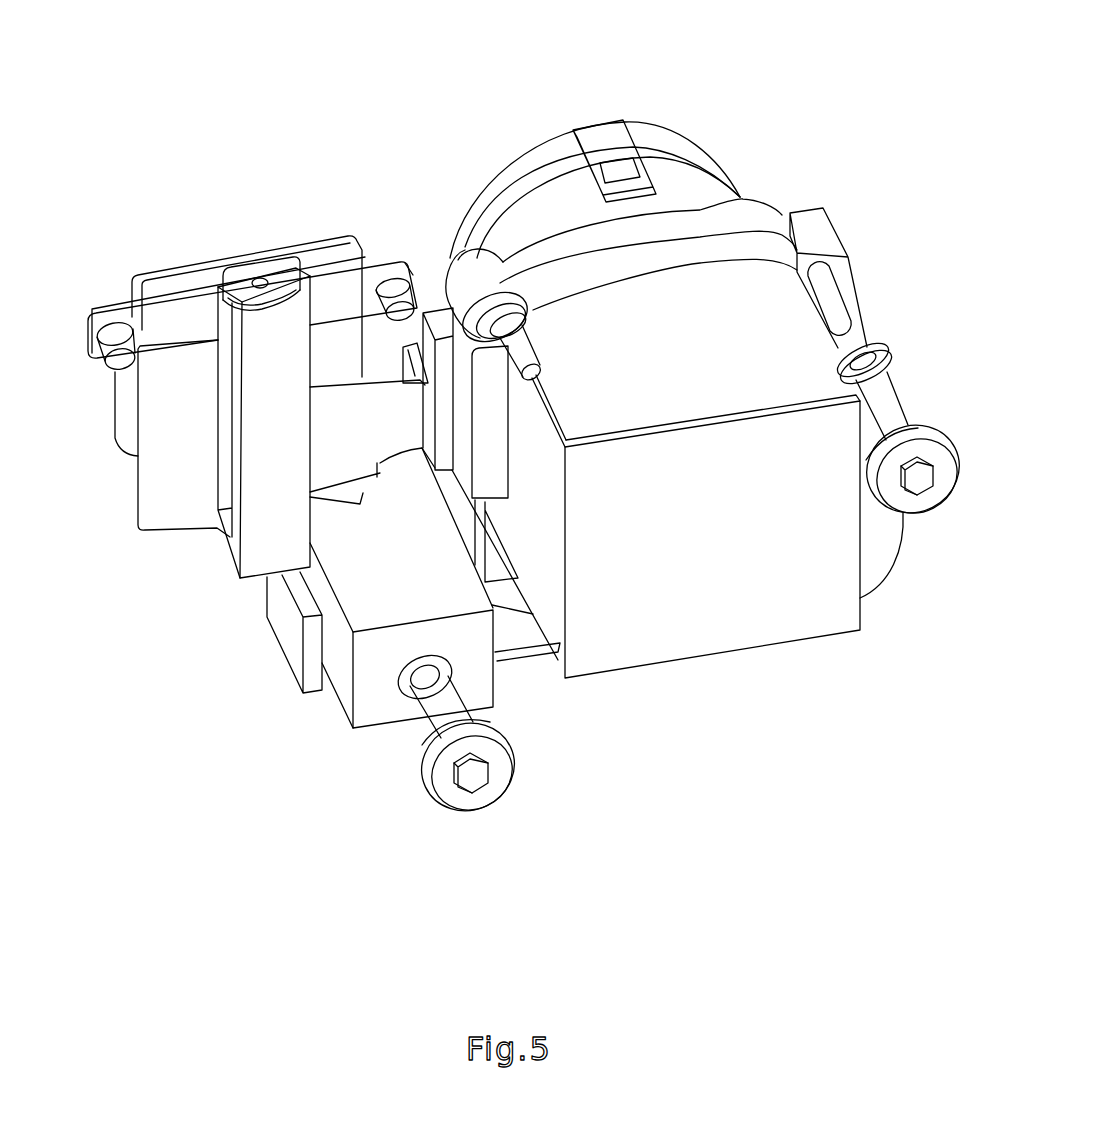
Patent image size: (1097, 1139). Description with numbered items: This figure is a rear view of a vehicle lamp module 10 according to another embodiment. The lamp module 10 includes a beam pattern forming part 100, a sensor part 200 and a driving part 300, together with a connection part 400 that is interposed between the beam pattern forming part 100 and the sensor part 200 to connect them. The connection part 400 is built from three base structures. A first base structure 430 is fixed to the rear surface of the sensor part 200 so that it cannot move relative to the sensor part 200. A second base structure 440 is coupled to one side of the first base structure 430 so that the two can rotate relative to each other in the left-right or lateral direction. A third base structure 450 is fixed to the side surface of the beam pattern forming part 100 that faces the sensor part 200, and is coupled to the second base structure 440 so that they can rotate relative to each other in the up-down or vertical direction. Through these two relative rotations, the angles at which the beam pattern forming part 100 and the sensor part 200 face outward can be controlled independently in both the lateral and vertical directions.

The lamp module 10 is at (248, 118).
The beam pattern forming part 100 is at (698, 86).
The sensor part 200 is at (120, 470).
The driving part 300 is at (318, 736).
The connection part 400 is at (892, 95).
The first base structure 430 is at (180, 327).
The second base structure 440 is at (270, 517).
The third base structure 450 is at (422, 312).